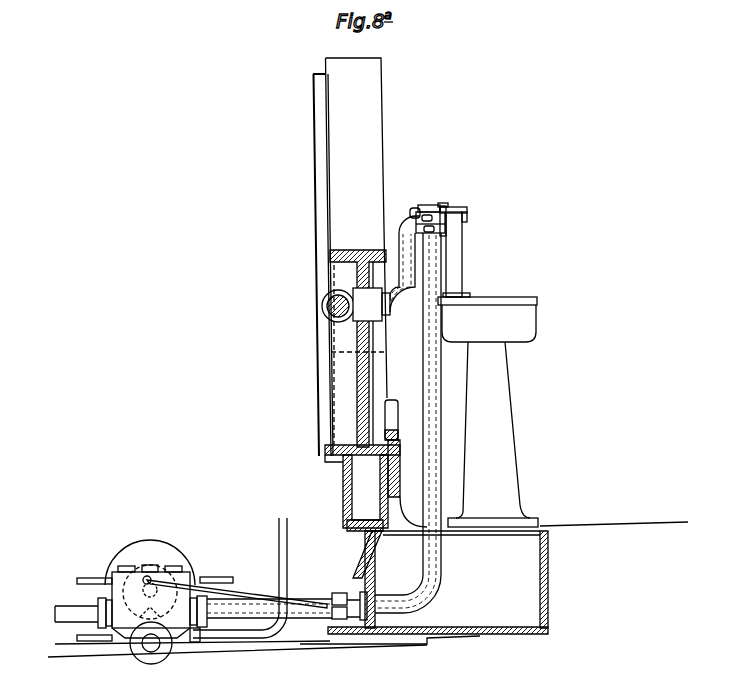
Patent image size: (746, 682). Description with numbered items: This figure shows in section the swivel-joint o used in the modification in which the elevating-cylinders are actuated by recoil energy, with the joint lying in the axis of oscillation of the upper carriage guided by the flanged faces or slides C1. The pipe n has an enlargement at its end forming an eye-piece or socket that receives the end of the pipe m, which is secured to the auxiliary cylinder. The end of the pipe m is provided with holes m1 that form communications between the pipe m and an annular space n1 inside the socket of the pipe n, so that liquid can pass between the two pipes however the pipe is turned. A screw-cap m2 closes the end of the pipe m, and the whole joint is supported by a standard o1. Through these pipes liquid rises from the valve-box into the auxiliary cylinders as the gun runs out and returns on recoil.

The flanged faces or slides C1 is at (370, 294).
The pipe m is at (395, 307).
The holes m1 is at (421, 210).
The screw-cap m2 is at (441, 207).
The swivel-joint o is at (433, 207).
The standard o1 is at (463, 256).
The pipe n is at (431, 373).
The annular space n1 is at (447, 211).